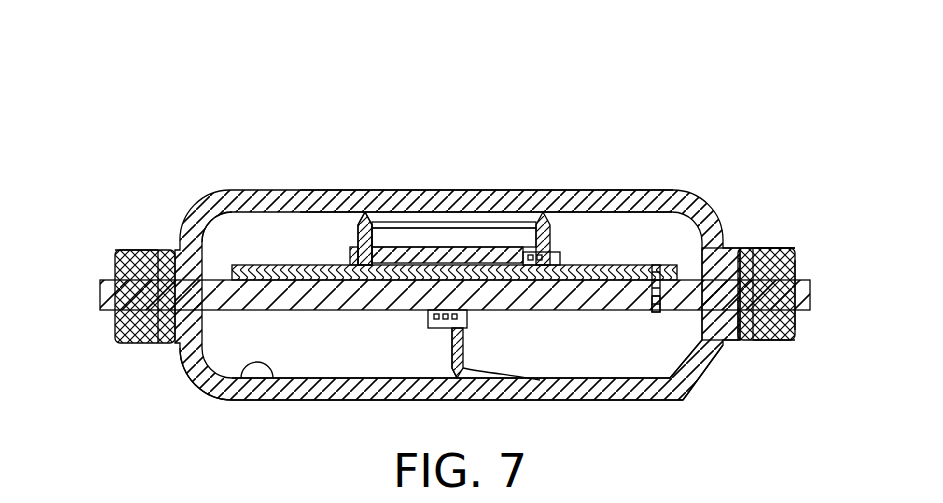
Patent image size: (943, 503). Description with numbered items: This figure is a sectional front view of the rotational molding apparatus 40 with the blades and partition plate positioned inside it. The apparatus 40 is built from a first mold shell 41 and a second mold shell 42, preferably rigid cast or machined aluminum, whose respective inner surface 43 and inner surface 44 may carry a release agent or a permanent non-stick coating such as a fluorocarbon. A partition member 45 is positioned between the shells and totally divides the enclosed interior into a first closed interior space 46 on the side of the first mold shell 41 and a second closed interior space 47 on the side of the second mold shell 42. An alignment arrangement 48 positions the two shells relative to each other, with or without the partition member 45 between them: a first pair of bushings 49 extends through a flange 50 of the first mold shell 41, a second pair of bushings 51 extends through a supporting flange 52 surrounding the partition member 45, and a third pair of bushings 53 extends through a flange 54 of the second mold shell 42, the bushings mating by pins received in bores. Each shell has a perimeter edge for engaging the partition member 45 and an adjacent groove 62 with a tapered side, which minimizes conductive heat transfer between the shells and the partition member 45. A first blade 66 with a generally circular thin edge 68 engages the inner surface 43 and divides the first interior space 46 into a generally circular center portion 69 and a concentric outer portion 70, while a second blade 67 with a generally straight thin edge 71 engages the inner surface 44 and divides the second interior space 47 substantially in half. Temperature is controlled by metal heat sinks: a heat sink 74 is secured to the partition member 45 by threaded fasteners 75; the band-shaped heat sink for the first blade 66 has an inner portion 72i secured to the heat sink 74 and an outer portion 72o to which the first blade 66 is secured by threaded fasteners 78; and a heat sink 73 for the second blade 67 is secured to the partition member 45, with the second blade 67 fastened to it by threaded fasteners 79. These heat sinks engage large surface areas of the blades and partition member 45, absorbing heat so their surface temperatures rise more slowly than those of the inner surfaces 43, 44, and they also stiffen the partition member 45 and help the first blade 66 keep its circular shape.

The rotational molding apparatus 40 is at (348, 168).
The first mold shell 41 is at (590, 200).
The second mold shell 42 is at (705, 377).
The inner surface of first mold shell 43 is at (240, 195).
The inner surface of second mold shell 44 is at (240, 400).
The partition member 45 is at (700, 270).
The first closed interior space 46 is at (215, 220).
The second closed interior space 47 is at (187, 370).
The alignment arrangement 48 is at (130, 250).
The first pair of bushings 49 is at (770, 250).
The flange of first mold shell 50 is at (793, 250).
The second pair of bushings 51 is at (810, 280).
The supporting flange 52 is at (100, 295).
The third pair of bushings 53 is at (778, 340).
The flange of second mold shell 54 is at (800, 330).
The groove 62 is at (162, 250).
The first blade 66 is at (355, 240).
The second blade 67 is at (465, 350).
The thin edge of first blade 68 is at (440, 222).
The center portion 69 is at (472, 238).
The outer portion 70 is at (577, 227).
The thin edge of second blade 71 is at (540, 380).
The inner portion of heat sink 72i is at (347, 262).
The outer portion of heat sink 72o is at (535, 247).
The heat sink for second blade 73 is at (430, 320).
The heat sink for partition member 74 is at (656, 263).
The threaded fasteners 75 is at (660, 314).
The threaded fasteners 78 is at (563, 262).
The threaded fasteners 79 is at (450, 378).